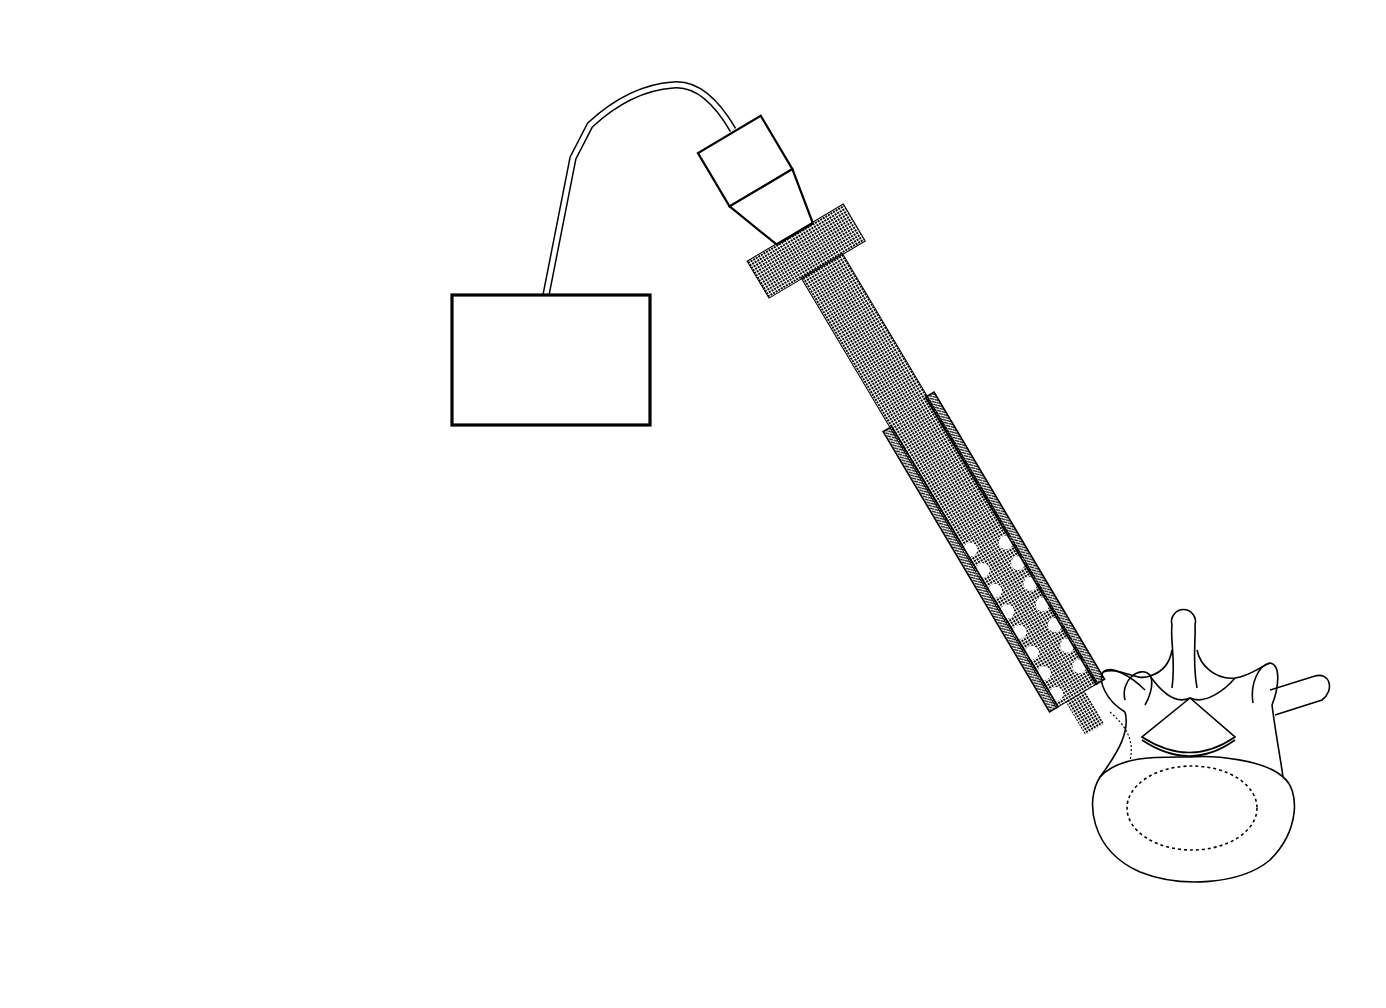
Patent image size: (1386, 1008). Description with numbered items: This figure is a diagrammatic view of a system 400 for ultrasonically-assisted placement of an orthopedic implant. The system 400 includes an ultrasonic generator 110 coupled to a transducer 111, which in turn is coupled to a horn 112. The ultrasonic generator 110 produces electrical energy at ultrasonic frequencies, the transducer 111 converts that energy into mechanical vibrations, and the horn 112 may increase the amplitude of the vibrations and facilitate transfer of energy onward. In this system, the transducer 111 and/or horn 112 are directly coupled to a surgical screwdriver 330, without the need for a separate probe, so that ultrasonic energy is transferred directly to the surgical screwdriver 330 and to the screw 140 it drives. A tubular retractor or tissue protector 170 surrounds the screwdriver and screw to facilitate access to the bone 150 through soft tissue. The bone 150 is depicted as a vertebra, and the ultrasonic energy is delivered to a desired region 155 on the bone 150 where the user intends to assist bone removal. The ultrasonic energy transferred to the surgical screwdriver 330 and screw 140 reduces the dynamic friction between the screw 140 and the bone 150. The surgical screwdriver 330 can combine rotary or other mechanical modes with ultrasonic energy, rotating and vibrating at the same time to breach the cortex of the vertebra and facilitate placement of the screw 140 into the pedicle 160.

The system 400 is at (766, 461).
The ultrasonic generator 110 is at (602, 445).
The transducer 111 is at (745, 161).
The horn 112 is at (776, 212).
The surgical screwdriver 330 is at (933, 465).
The tubular retractor or tissue protector 170 is at (992, 552).
The screw 140 is at (1028, 613).
The bone 150 is at (1219, 598).
The desired region 155 is at (1085, 713).
The pedicle 160 is at (1105, 737).